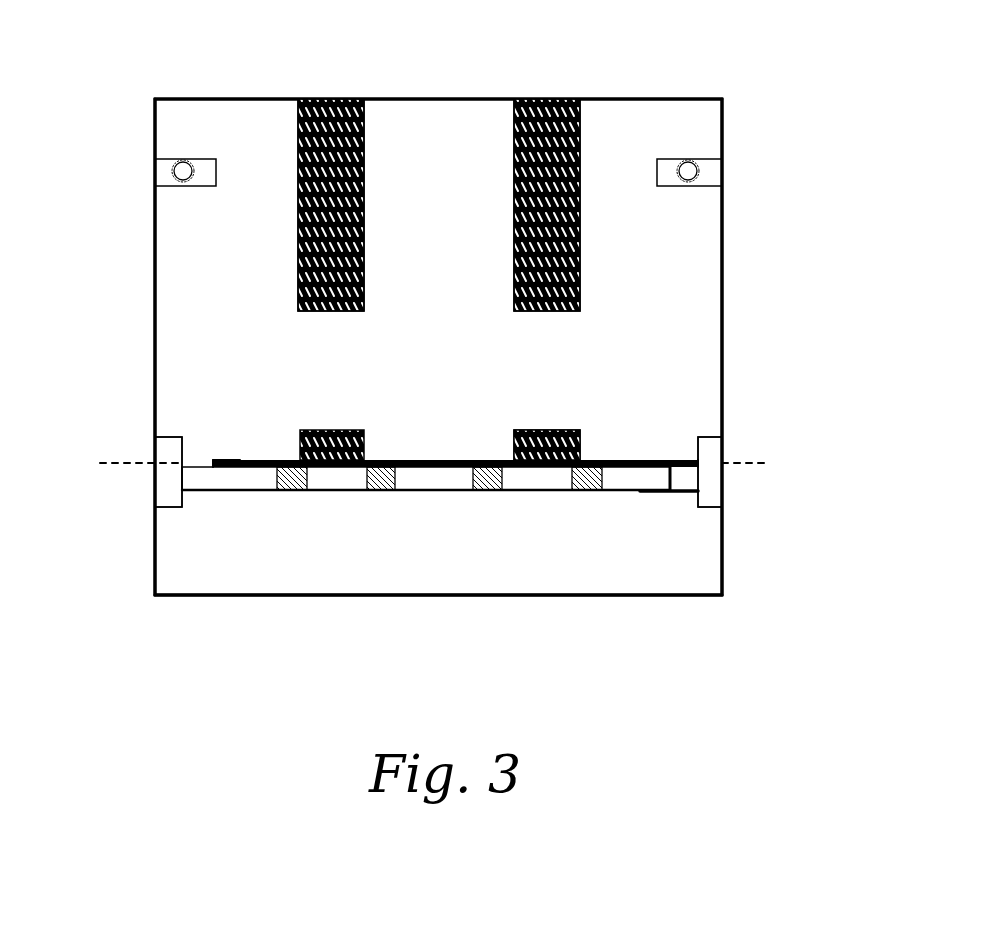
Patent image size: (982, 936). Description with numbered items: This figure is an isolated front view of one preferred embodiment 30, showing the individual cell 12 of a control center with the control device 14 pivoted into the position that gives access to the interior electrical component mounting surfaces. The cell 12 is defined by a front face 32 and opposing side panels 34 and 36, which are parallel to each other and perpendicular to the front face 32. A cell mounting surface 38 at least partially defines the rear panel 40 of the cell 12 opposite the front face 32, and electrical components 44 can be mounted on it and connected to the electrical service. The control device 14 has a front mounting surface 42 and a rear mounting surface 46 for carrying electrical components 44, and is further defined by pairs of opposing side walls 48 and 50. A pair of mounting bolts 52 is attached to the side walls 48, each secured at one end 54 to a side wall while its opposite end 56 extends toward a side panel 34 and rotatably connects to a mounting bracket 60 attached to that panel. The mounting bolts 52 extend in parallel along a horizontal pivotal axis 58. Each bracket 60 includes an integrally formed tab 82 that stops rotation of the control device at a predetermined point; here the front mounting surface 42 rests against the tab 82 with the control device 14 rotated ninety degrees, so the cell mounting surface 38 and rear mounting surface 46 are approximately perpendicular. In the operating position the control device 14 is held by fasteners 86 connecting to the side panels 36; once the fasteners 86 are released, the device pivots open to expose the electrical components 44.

The cell 12 is at (608, 572).
The control device 14 is at (418, 485).
The preferred embodiment 30 is at (383, 686).
The front face 32 is at (695, 573).
The side panel 34 is at (154, 238).
The side panel 36 is at (455, 99).
The cell mounting surface 38 is at (562, 99).
The rear panel 40 is at (220, 112).
The front mounting surface 42 is at (580, 248).
The electrical components 44 is at (332, 99).
The rear mounting surface 46 is at (432, 460).
The side walls 48 is at (213, 482).
The side walls 50 is at (670, 465).
The mounting bolts 52 is at (195, 462).
The end of mounting bolt 54 is at (182, 463).
The opposite end of mounting bolt 56 is at (213, 462).
The pivotal axis 58 is at (790, 463).
The mounting brackets 60 is at (165, 490).
The tab 82 is at (684, 494).
The fasteners 86 is at (175, 172).